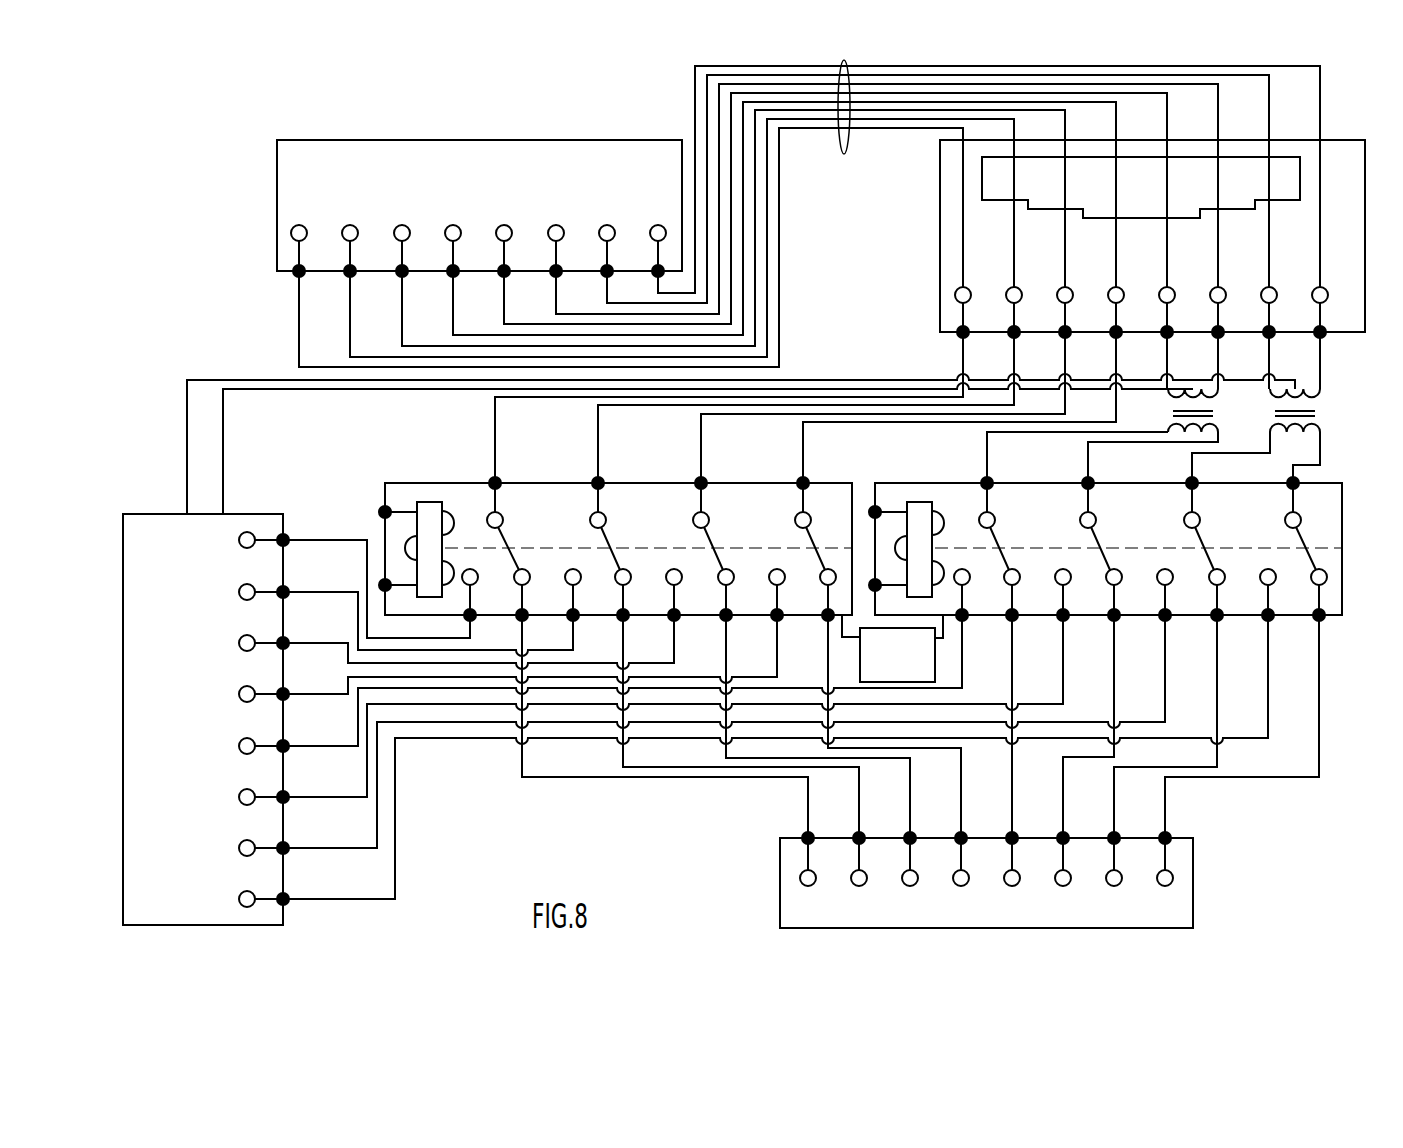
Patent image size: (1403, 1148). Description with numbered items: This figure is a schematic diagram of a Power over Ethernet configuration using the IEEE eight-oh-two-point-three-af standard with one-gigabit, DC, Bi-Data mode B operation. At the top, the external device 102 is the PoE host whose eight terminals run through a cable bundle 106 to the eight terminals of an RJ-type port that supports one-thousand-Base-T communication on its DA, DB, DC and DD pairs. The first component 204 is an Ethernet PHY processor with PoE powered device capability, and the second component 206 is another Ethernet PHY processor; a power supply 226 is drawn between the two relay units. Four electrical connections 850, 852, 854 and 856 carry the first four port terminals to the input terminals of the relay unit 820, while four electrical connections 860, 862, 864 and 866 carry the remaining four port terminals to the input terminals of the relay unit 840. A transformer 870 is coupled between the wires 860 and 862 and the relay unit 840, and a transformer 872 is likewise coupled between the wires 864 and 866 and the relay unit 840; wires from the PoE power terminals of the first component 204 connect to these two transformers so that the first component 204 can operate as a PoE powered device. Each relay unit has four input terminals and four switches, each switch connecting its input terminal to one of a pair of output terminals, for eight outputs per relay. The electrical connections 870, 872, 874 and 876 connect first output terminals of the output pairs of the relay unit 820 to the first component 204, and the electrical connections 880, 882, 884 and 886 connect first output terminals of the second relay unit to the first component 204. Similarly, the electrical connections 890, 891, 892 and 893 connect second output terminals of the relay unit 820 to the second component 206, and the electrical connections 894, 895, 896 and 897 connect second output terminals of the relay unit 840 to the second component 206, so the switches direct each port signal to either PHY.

The external device 102 is at (575, 140).
The cable 106 is at (838, 145).
The first component 204 is at (245, 514).
The second component 206 is at (780, 872).
The power supply 226 is at (860, 648).
The relay unit 820 is at (448, 483).
The relay unit 840 is at (932, 483).
The electrical connection 850 is at (495, 423).
The electrical connection 852 is at (598, 428).
The electrical connection 854 is at (701, 436).
The electrical connection 856 is at (803, 438).
The electrical connection 860 is at (987, 456).
The electrical connection 862 is at (1088, 460).
The electrical connection 864 is at (1192, 466).
The electrical connection 866 is at (1322, 448).
The transformer 870 is at (307, 540).
The transformer 872 is at (307, 592).
The electrical connection 874 is at (307, 643).
The electrical connection 876 is at (307, 694).
The electrical connection 880 is at (307, 746).
The electrical connection 882 is at (307, 797).
The electrical connection 884 is at (307, 848).
The electrical connection 886 is at (307, 899).
The electrical connection 890 is at (808, 818).
The electrical connection 891 is at (859, 818).
The electrical connection 892 is at (910, 818).
The electrical connection 893 is at (961, 818).
The electrical connection 894 is at (1012, 818).
The electrical connection 895 is at (1063, 818).
The electrical connection 896 is at (1114, 818).
The electrical connection 897 is at (1165, 818).